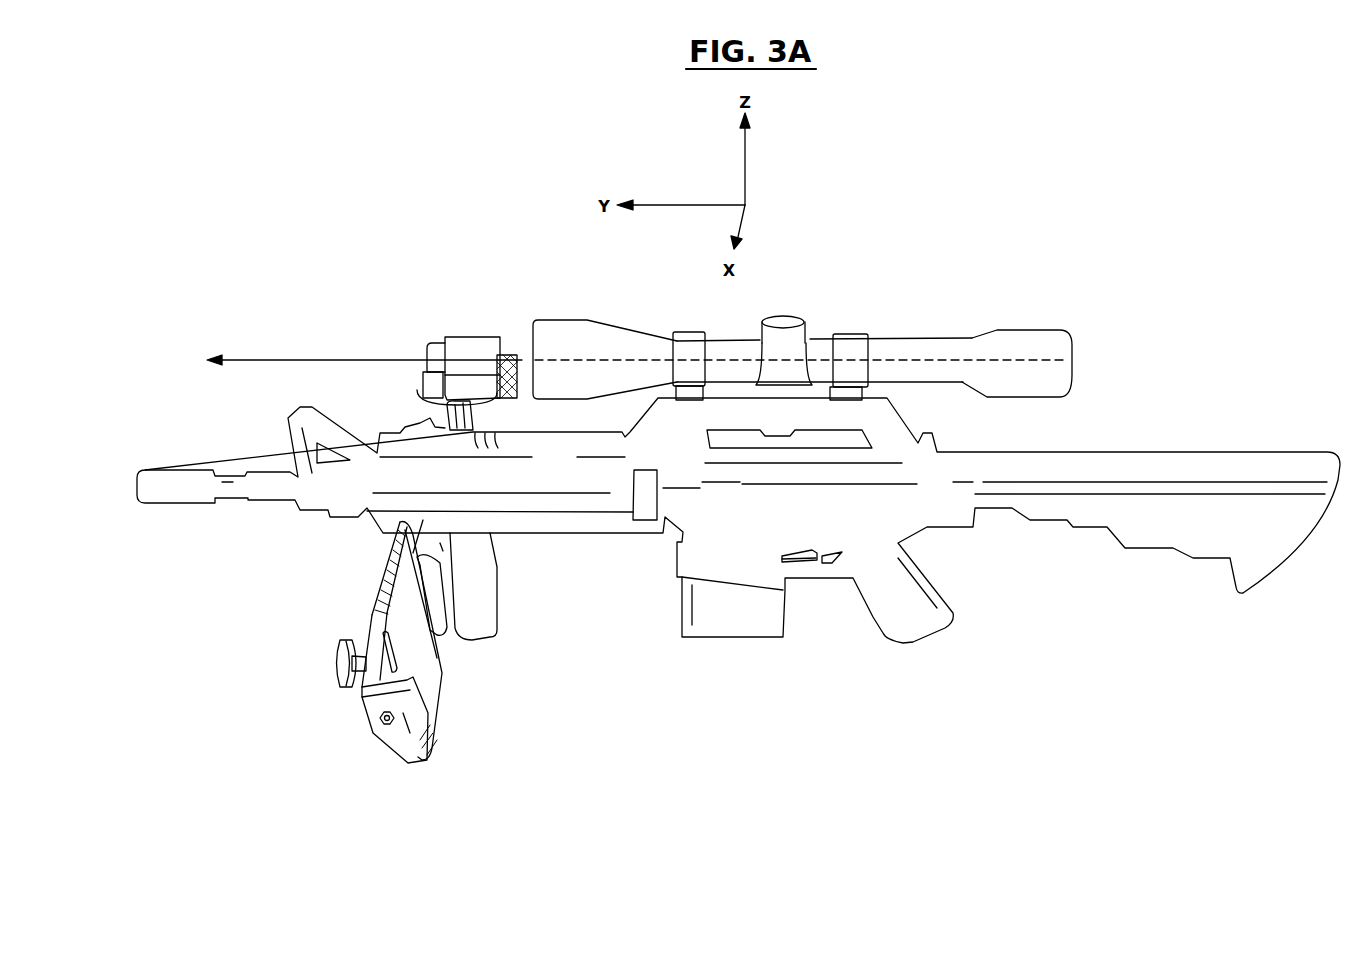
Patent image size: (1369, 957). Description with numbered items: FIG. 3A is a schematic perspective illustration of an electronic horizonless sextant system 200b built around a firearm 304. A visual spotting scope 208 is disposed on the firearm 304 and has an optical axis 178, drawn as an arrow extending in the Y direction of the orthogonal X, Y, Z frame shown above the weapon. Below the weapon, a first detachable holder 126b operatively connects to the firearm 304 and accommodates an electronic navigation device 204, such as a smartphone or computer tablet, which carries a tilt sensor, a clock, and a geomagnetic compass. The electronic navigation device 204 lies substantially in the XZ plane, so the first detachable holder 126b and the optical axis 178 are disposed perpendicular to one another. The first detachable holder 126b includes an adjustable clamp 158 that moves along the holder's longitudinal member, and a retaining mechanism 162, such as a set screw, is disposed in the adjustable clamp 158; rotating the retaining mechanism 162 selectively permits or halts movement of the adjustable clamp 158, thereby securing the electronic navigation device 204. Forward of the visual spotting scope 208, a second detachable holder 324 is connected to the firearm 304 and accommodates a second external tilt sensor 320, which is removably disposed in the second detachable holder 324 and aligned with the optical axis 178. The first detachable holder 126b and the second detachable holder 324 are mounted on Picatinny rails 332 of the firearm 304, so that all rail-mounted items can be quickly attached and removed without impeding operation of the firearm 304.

The electronic horizonless sextant system 200b is at (308, 265).
The firearm 304 is at (792, 527).
The Picatinny rails 332 is at (502, 580).
The first detachable holder 126b is at (323, 727).
The electronic navigation device 204 is at (378, 578).
The retaining mechanism 162 is at (338, 657).
The adjustable clamp 158 is at (392, 733).
The second detachable holder 324 is at (458, 305).
The second external tilt sensor 320 is at (502, 362).
The optical axis 178 is at (283, 358).
The visual spotting scope 208 is at (1022, 342).